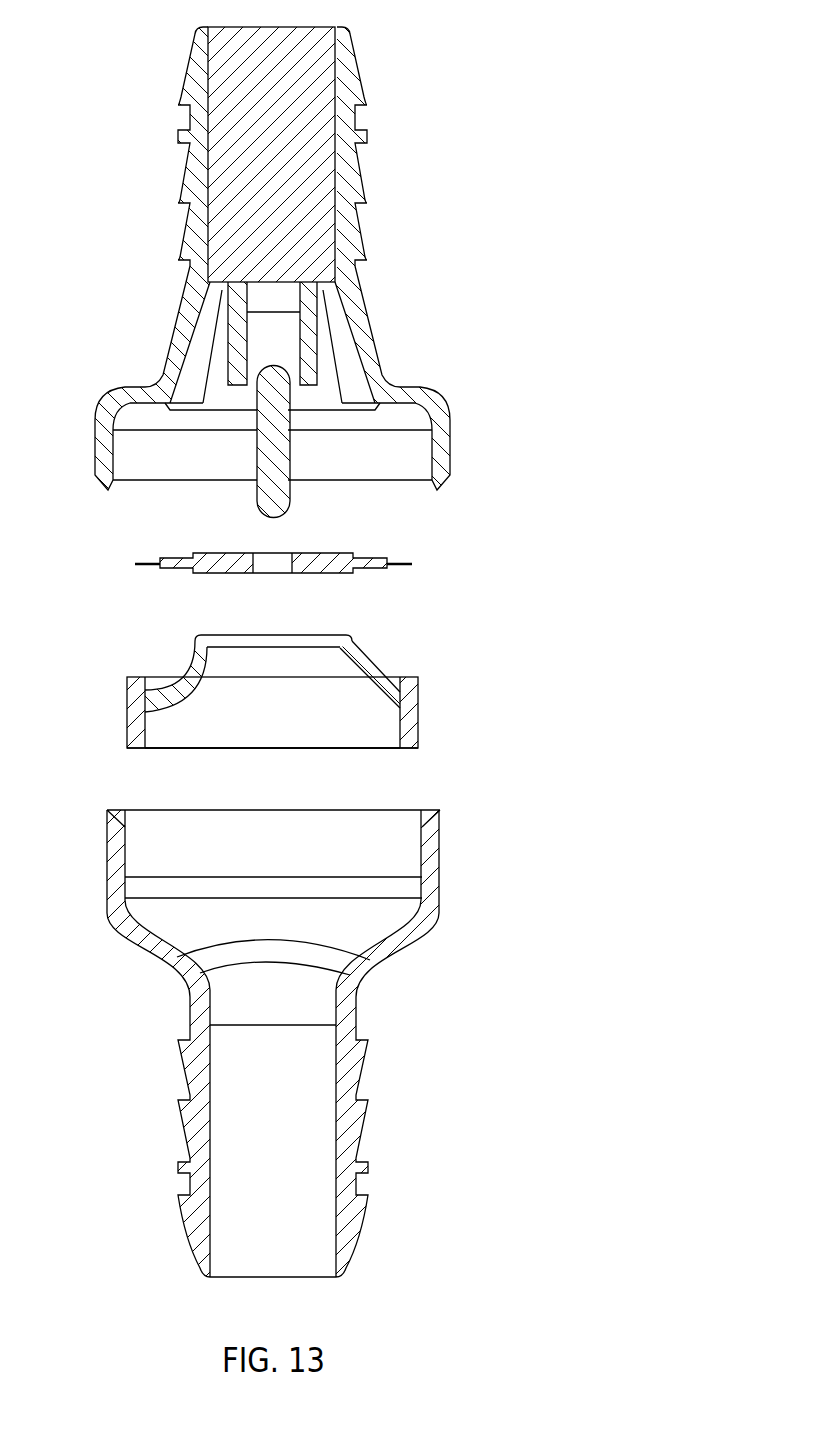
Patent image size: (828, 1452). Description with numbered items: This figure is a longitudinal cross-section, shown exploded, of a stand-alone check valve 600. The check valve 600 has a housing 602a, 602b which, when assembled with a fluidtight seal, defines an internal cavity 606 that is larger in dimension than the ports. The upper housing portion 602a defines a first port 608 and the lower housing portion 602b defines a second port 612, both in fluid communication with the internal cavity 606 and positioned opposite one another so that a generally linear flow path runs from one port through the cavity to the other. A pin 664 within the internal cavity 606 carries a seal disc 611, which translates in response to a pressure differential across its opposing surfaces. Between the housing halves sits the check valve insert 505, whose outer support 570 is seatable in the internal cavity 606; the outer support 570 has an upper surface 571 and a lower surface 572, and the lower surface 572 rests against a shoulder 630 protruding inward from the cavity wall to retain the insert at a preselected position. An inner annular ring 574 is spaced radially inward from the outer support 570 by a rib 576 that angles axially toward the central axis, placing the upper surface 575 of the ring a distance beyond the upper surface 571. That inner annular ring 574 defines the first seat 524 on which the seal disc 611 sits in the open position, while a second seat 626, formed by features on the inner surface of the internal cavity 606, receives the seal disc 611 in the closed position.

The stand-alone check valve 600 is at (612, 51).
The housing 602a is at (373, 340).
The first port 608 is at (318, 28).
The second seat 626 is at (378, 416).
The pin 664 is at (264, 485).
The seal disc 611 is at (412, 563).
The first seat 524 is at (143, 629).
The check valve insert 505 is at (418, 690).
The outer support 570 is at (292, 728).
The lower surface 572 is at (212, 750).
The upper surface 575 is at (228, 634).
The inner annular ring 574 is at (345, 642).
The upper surface 571 is at (145, 678).
The rib 576 is at (377, 666).
The housing 602b is at (355, 1003).
The internal cavity 606 is at (125, 833).
The shoulder 630 is at (343, 877).
The second port 612 is at (307, 1277).